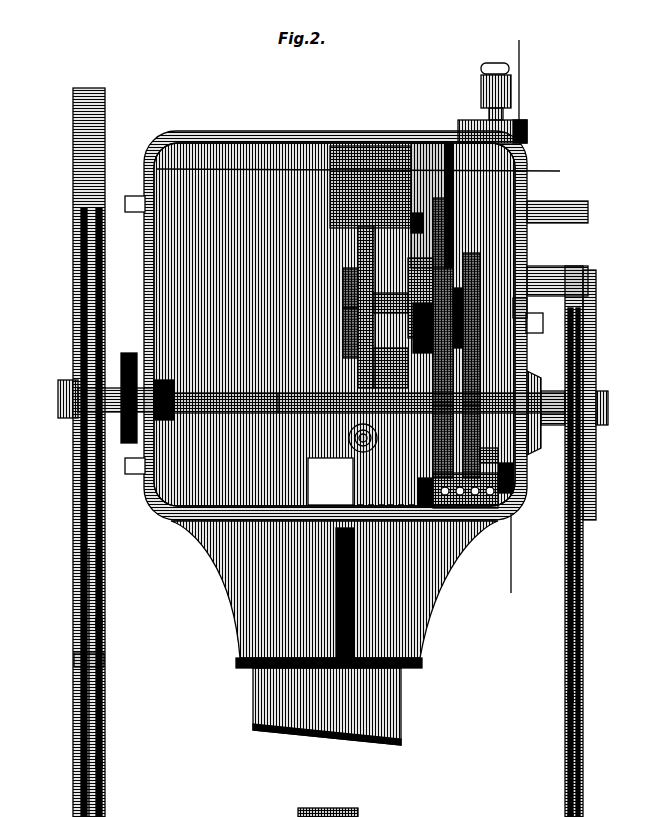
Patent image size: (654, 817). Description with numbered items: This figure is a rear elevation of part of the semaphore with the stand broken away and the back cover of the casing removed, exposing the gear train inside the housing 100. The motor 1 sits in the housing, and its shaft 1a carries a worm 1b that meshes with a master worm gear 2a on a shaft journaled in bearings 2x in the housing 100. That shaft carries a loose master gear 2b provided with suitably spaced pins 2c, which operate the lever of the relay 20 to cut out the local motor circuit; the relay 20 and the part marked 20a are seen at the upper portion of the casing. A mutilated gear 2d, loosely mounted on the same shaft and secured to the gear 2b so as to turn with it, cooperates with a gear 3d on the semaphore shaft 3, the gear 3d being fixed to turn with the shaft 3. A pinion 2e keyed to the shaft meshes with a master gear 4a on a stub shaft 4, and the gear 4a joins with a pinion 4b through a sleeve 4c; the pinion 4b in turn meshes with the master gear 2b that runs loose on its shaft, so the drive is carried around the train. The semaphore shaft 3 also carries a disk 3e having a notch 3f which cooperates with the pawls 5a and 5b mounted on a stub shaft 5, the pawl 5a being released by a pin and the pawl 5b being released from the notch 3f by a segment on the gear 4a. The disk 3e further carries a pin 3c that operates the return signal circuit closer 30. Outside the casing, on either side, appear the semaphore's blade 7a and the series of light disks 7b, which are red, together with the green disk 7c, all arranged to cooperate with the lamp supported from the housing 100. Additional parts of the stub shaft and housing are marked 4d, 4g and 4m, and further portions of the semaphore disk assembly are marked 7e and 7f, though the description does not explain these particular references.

The motor 1 is at (373, 399).
The motor shaft 1a is at (368, 435).
The worm 1b is at (362, 450).
The master worm gear 2a is at (350, 372).
The loose master gear 2b is at (420, 360).
The pins 2c is at (402, 250).
The mutilated gear 2d is at (342, 262).
The pinion 2e is at (398, 342).
The bearings 2x is at (345, 345).
The semaphore shaft 3 is at (267, 424).
The pin 3c is at (505, 450).
The gear 3d is at (420, 468).
The disk 3e is at (474, 442).
The notch 3f is at (530, 356).
The stub shaft 4 is at (449, 160).
The master gear 4a is at (432, 178).
The pinion 4b is at (358, 220).
The sleeve 4c is at (434, 240).
The gear column 4d is at (466, 258).
The housing block 4g is at (505, 468).
The housing base 4m is at (356, 812).
The stub shaft 5 is at (148, 161).
The pawl 5a is at (506, 299).
The pawl 5b is at (524, 320).
The blade 7a is at (65, 143).
The light disks 7b is at (95, 618).
The light disk 7c is at (93, 482).
The rack bar 7e is at (66, 653).
The right rack 7f is at (578, 648).
The relay 20 is at (345, 150).
The block extension 20a is at (406, 210).
The return signal circuit closer 30 is at (482, 515).
The housing 100 is at (146, 268).